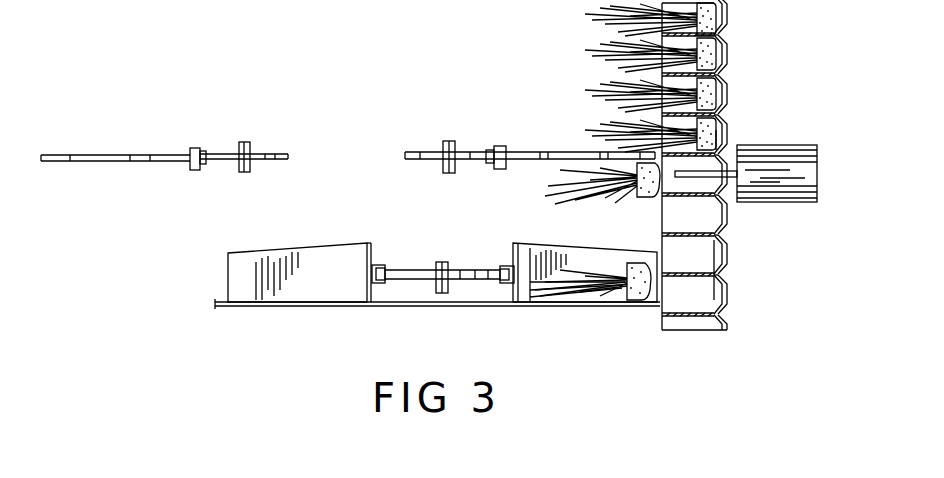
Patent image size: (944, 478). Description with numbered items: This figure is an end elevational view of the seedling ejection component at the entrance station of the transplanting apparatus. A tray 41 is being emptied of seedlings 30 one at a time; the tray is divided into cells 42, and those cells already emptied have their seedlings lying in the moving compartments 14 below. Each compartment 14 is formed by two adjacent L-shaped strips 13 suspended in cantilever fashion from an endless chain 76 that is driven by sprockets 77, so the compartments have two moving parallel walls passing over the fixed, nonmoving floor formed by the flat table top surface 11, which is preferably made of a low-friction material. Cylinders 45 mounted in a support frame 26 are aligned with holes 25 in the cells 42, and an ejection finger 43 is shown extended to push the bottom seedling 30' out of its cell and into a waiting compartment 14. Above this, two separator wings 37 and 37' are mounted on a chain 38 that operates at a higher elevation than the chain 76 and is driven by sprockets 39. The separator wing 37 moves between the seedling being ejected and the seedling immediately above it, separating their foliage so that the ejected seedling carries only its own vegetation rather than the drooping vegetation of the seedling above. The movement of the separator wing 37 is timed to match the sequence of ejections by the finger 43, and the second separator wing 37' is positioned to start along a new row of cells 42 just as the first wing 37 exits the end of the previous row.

The flat table top surface 11 is at (450, 306).
The L-shaped strip 13 is at (572, 252).
The moving compartment 14 is at (325, 283).
The hole 25 is at (728, 54).
The support frame 26 is at (818, 186).
The seedling 30 is at (593, 305).
The bottom seedling 30' is at (576, 187).
The separator wing 37 is at (530, 137).
The second separator wing 37' is at (164, 138).
The chain 38 is at (203, 170).
The sprocket 39 is at (238, 153).
The tray 41 is at (695, 325).
The cell 42 is at (728, 277).
The ejection finger 43 is at (727, 140).
The cylinder 45 is at (816, 160).
The endless chain 76 is at (380, 287).
The sprocket 77 is at (420, 268).